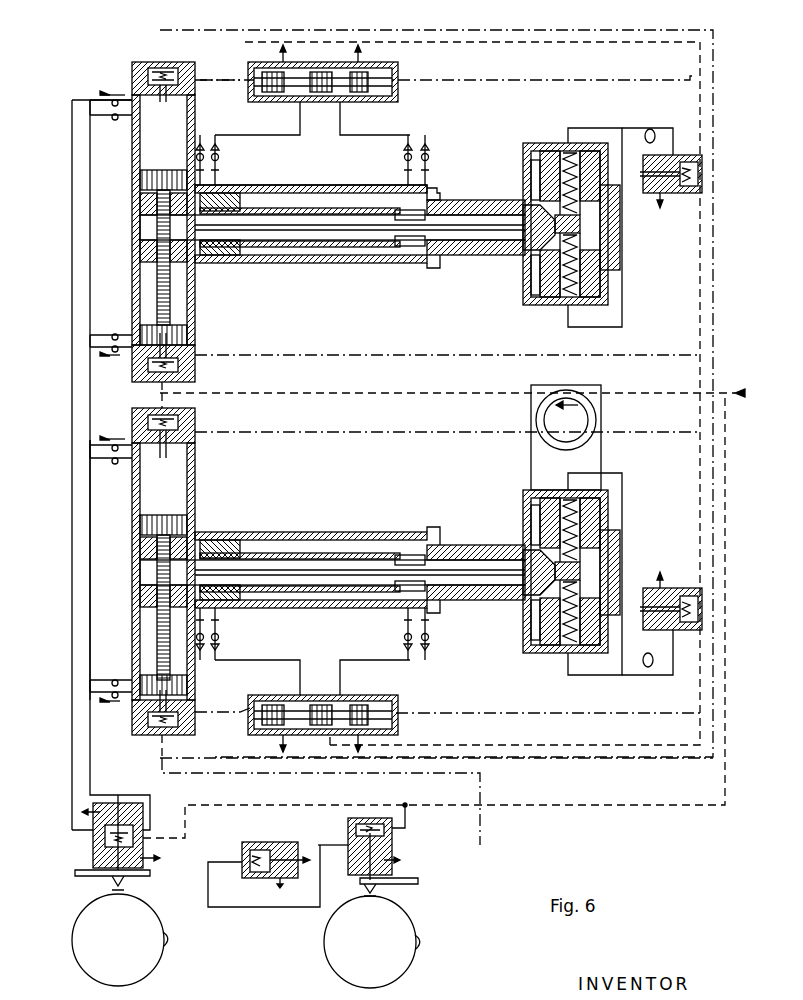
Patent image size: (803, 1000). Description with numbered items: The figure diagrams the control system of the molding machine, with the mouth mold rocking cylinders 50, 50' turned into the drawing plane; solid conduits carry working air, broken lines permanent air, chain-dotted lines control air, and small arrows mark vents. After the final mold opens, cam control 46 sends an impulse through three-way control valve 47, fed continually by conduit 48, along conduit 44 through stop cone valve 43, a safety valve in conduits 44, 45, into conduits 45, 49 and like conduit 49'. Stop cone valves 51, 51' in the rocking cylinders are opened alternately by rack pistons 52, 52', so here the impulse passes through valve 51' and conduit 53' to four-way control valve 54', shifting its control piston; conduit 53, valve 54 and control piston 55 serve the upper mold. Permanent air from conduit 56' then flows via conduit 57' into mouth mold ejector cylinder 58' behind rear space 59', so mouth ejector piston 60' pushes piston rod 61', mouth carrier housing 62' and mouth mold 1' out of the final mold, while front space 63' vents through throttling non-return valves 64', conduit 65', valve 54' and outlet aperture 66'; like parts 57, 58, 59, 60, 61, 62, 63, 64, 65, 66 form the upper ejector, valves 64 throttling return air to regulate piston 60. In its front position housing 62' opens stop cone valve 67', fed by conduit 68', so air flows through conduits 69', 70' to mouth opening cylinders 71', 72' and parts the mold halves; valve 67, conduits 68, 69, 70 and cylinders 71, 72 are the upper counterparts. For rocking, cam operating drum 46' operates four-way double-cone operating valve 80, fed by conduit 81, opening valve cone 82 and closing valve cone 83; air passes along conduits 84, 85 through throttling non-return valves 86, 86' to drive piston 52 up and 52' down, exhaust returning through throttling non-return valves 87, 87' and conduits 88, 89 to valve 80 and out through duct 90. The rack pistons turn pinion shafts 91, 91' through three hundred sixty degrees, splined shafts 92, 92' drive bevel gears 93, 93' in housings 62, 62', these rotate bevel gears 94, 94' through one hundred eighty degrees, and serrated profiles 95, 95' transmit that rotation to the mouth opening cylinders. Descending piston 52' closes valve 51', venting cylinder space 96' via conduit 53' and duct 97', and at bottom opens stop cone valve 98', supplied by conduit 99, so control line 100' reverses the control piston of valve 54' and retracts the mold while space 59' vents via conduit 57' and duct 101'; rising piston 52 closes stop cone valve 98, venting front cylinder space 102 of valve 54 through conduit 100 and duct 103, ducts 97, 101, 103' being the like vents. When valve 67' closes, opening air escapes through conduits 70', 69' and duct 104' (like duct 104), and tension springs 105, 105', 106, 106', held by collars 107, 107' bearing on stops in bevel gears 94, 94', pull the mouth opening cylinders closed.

The mouth mold 1' is at (578, 437).
The stop cone valve 43 is at (292, 878).
The conduit 44 is at (225, 907).
The conduit 45 is at (162, 770).
The cam control 46 is at (388, 933).
The cam operating drum 46' is at (134, 940).
The three-way control valve 47 is at (392, 848).
The conduit 48 is at (408, 812).
The conduit 49 is at (472, 393).
The conduit 49' is at (436, 772).
The mouth mold rocking cylinder 50 is at (311, 223).
The mouth mold rocking cylinder 50' is at (311, 578).
The stop cone valve 51 is at (162, 63).
The stop cone valve 51' is at (161, 729).
The rack piston 52 is at (142, 257).
The rack piston 52' is at (142, 605).
The conduit 53 is at (217, 62).
The conduit 53' is at (222, 726).
The four-way control valve 54 is at (323, 66).
The four-way control valve 54' is at (311, 725).
The control piston 55 is at (395, 88).
The permanent air conduit 56' is at (383, 758).
The conduit 57 is at (257, 134).
The conduit 57' is at (257, 665).
The mouth mold ejector cylinder 58 is at (317, 209).
The mouth mold ejector cylinder 58' is at (317, 584).
The rear cylinder space 59 is at (220, 264).
The rear cylinder space 59' is at (220, 550).
The mouth ejector piston 60 is at (226, 180).
The mouth ejector piston 60' is at (229, 529).
The piston rod 61 is at (476, 208).
The piston rod 61' is at (470, 550).
The mouth carrier housing 62 is at (622, 223).
The mouth carrier housing 62' is at (628, 572).
The front cylinder space 63 is at (411, 249).
The front cylinder space 63' is at (390, 546).
The throttling non-return valves 64 is at (328, 144).
The throttling non-return valves 64' is at (331, 634).
The conduit 65 is at (375, 118).
The conduit 65' is at (375, 676).
The outlet aperture 66 is at (387, 51).
The outlet aperture 66' is at (365, 758).
The stop cone valve 67 is at (671, 144).
The stop cone valve 67' is at (671, 627).
The conduit 68 is at (675, 236).
The conduit 68' is at (672, 459).
The conduit 69 is at (647, 120).
The conduit 69' is at (646, 663).
The conduit 70 is at (589, 224).
The conduit 70' is at (589, 567).
The mouth opening cylinder 71 is at (597, 225).
The mouth opening cylinder 71' is at (599, 571).
The mouth opening cylinder 72 is at (624, 156).
The mouth opening cylinder 72' is at (628, 636).
The four-way double-cone operating valve 80 is at (108, 803).
The conduit 81 is at (630, 805).
The valve cone 82 is at (130, 795).
The valve cone 83 is at (125, 885).
The conduit 84 is at (86, 515).
The conduit 85 is at (90, 692).
The throttling non-return valve 86 is at (111, 323).
The throttling non-return valve 86' is at (111, 676).
The throttling non-return valves 87 is at (111, 113).
The throttling non-return valves 87' is at (111, 466).
The conduit 88 is at (88, 100).
The conduit 89 is at (100, 455).
The duct 90 is at (148, 856).
The pinion shaft 91 is at (249, 182).
The pinion shaft 91' is at (249, 530).
The splined shaft 92 is at (300, 264).
The splined shaft 92' is at (300, 613).
The bevel gear 93 is at (521, 240).
The bevel gear 93' is at (524, 550).
The bevel gear 94 is at (602, 212).
The bevel gear 94' is at (600, 586).
The serrated profiles 95 is at (519, 246).
The serrated profiles 95' is at (525, 582).
The cylinder space 96' is at (323, 735).
The duct 97 is at (131, 73).
The duct 97' is at (134, 710).
The stop cone valve 98 is at (191, 344).
The stop cone valve 98' is at (197, 449).
The conduit 99 is at (390, 393).
The conduit 100 is at (436, 393).
The control line 100' is at (447, 586).
The duct 101 is at (264, 46).
The duct 101' is at (308, 760).
The front cylinder space 102 is at (385, 92).
The venting duct 103 is at (145, 369).
The venting duct 103' is at (145, 418).
The duct 104 is at (668, 210).
The duct 104' is at (662, 567).
The tension spring 105 is at (591, 239).
The tension spring 105' is at (556, 565).
The tension spring 106 is at (557, 155).
The tension spring 106' is at (581, 638).
The collar 107 is at (621, 241).
The collar 107' is at (504, 609).